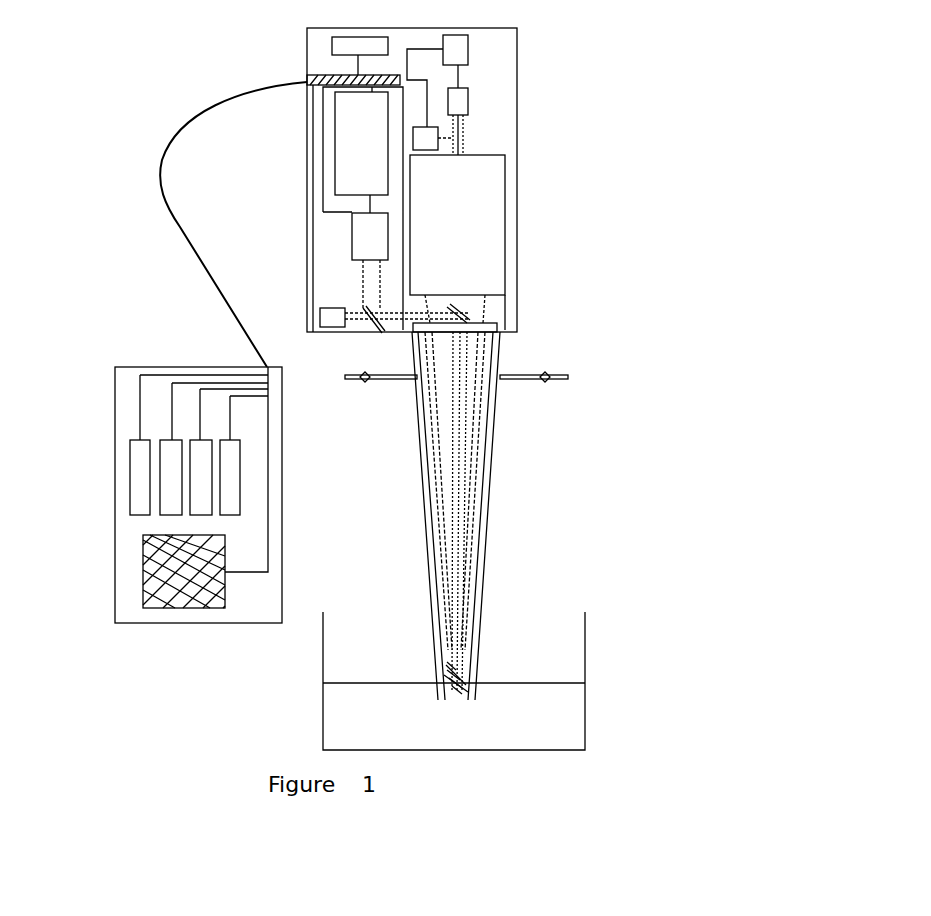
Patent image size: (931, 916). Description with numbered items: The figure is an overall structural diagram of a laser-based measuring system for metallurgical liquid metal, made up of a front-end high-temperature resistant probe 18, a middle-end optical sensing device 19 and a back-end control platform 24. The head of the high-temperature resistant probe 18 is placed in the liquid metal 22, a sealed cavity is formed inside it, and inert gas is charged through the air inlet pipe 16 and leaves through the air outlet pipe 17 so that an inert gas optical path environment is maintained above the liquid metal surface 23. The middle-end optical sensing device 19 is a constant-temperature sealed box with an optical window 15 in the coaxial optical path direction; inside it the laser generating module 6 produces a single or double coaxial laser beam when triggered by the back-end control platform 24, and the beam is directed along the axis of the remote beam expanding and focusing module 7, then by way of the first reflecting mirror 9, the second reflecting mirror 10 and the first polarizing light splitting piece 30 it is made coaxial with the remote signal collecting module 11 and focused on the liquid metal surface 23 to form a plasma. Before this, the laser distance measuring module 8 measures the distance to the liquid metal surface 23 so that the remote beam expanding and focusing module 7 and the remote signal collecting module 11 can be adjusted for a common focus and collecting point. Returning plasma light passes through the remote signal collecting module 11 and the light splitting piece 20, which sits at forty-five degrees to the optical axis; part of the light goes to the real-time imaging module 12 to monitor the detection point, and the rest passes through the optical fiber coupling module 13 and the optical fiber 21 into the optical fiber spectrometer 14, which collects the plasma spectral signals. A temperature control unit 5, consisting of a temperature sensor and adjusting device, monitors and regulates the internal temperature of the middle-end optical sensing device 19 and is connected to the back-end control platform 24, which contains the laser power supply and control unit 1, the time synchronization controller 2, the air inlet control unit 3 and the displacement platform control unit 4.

The laser power supply and control unit 1 is at (140, 477).
The time synchronization controller 2 is at (171, 477).
The air inlet control unit 3 is at (201, 477).
The displacement platform control unit 4 is at (230, 477).
The temperature control unit 5 is at (360, 56).
The laser generating module 6 is at (361, 152).
The remote beam expanding and focusing module 7 is at (370, 260).
The laser distance measuring module 8 is at (332, 317).
The first reflecting mirror 9 is at (363, 325).
The second reflecting mirror 10 is at (470, 316).
The remote signal collecting module 11 is at (457, 242).
The real-time imaging module 12 is at (433, 138).
The optical fiber coupling module 13 is at (458, 101).
The optical fiber spectrometer 14 is at (437, 81).
The optical window 15 is at (505, 337).
The air inlet pipe of high-temperature resistant probe 16 is at (345, 382).
The air outlet pipe of high-temperature resistant probe 17 is at (568, 380).
The high-temperature resistant probe 18 is at (518, 152).
The middle-end optical sensing device 19 is at (487, 520).
The light splitting piece 20 is at (167, 217).
The optical fiber 21 is at (463, 73).
The liquid metal 22 is at (552, 707).
The liquid metal surface 23 is at (450, 685).
The back-end control platform 24 is at (113, 470).
The first polarizing light splitting piece 30 is at (465, 133).